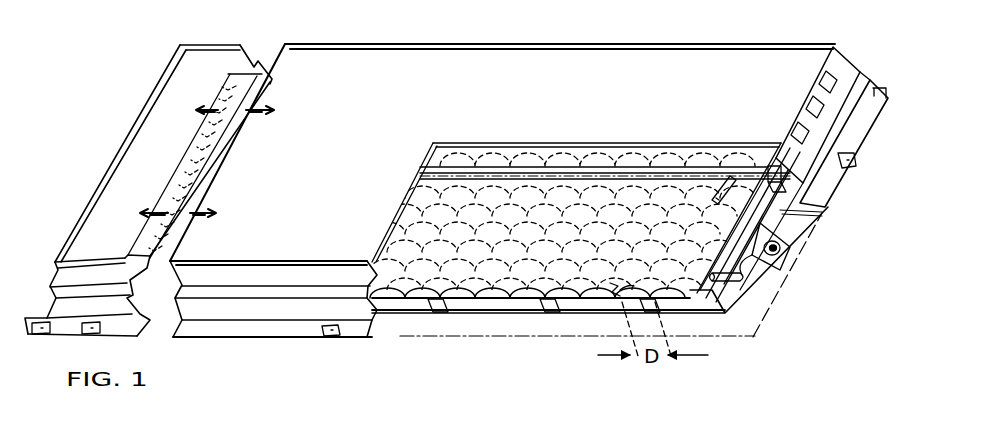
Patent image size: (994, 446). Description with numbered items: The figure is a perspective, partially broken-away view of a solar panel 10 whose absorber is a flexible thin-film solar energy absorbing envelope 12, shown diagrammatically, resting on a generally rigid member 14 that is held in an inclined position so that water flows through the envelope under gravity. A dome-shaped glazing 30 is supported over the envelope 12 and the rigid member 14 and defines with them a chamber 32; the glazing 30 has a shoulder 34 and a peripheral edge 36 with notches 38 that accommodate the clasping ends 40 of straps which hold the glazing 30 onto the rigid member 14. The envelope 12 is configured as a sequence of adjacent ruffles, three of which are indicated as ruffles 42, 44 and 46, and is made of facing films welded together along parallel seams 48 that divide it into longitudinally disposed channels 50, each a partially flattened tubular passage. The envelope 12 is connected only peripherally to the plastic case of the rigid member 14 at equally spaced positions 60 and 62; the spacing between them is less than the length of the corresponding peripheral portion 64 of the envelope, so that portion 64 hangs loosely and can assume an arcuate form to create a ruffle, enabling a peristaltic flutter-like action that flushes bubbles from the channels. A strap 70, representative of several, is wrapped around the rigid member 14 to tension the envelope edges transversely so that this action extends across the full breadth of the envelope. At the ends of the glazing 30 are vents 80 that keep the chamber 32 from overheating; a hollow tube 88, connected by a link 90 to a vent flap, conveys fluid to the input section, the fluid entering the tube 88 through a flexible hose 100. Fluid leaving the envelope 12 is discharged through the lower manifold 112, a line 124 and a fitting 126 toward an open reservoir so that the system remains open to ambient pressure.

The solar panel 10 is at (233, 34).
The solar energy absorbing envelope 12 is at (567, 294).
The rigid member 14 is at (600, 312).
The glazing 30 is at (321, 160).
The chamber 32 is at (442, 157).
The shoulder 34 is at (283, 306).
The peripheral edge 36 is at (265, 322).
The notches 38 is at (331, 337).
The clasping ends 40 is at (328, 338).
The ruffle 42 is at (497, 285).
The ruffle 44 is at (533, 285).
The ruffle 46 is at (569, 285).
The seams 48 is at (605, 256).
The channels 50 is at (659, 246).
The connection position 60 is at (604, 280).
The connection position 62 is at (665, 278).
The peripheral portion of the envelope 64 is at (621, 288).
The strap 70 is at (550, 312).
The vents 80 is at (793, 133).
The hollow tube 88 is at (566, 172).
The link 90 is at (770, 172).
The flexible hose 100 is at (720, 194).
The lower manifold 112 is at (614, 260).
The line 124 is at (787, 275).
The fitting 126 is at (789, 249).